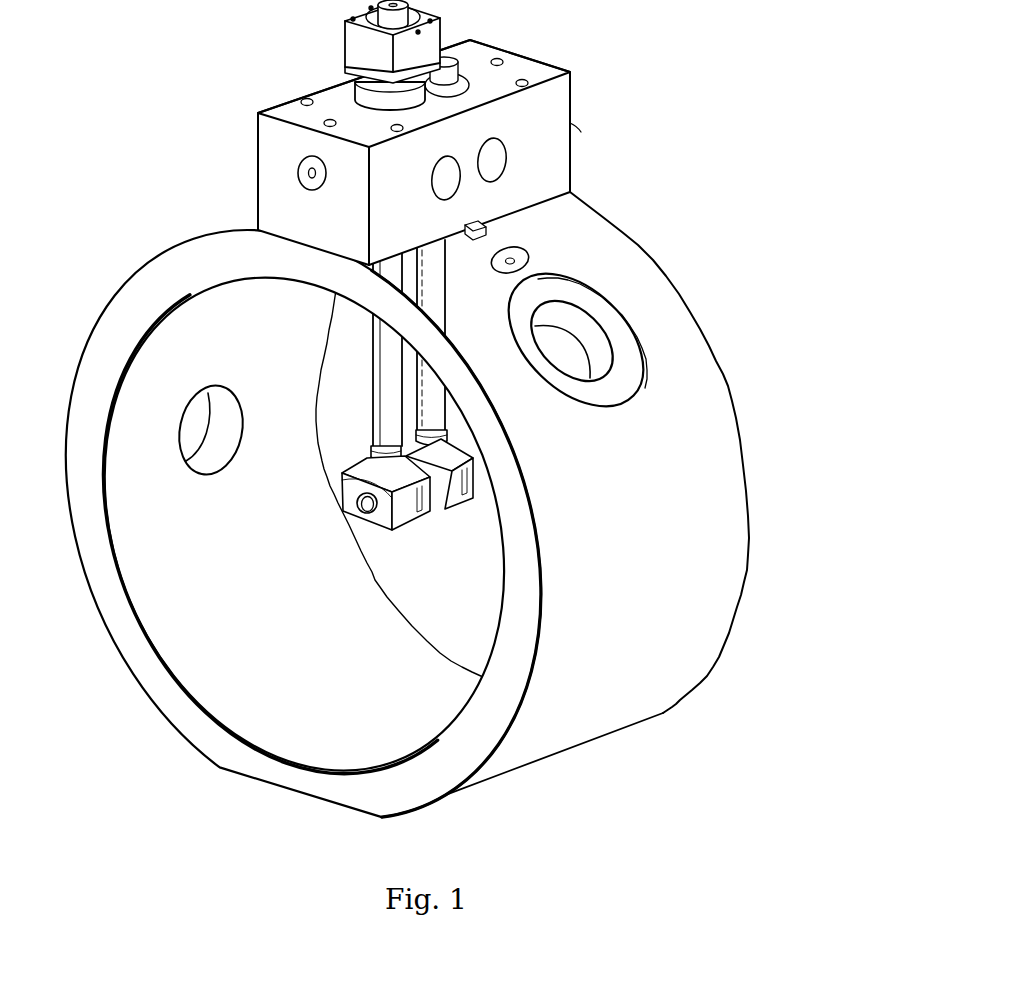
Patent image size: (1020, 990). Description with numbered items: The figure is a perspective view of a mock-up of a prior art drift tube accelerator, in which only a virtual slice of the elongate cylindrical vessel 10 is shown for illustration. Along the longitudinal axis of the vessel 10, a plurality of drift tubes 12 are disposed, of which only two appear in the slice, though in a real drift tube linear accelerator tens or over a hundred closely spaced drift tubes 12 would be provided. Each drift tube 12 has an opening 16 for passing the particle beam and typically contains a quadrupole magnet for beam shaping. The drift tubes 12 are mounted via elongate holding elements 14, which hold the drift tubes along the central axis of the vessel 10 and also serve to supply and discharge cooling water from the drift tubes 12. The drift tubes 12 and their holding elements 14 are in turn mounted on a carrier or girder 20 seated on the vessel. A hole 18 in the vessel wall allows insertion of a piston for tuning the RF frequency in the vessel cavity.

The vessel 10 is at (650, 695).
The drift tube 12 is at (410, 540).
The holding element 14 is at (378, 377).
The opening 16 is at (361, 511).
The hole 18 is at (580, 360).
The carrier or girder 20 is at (556, 125).